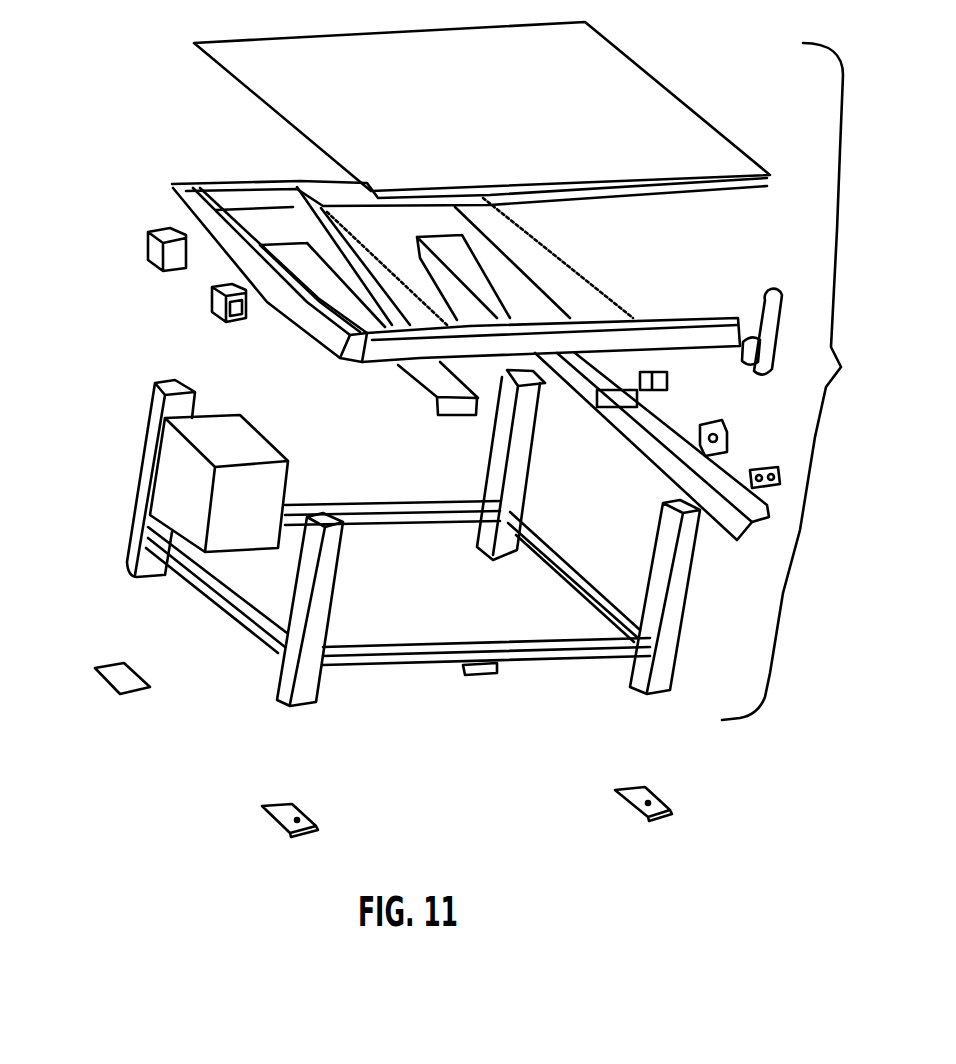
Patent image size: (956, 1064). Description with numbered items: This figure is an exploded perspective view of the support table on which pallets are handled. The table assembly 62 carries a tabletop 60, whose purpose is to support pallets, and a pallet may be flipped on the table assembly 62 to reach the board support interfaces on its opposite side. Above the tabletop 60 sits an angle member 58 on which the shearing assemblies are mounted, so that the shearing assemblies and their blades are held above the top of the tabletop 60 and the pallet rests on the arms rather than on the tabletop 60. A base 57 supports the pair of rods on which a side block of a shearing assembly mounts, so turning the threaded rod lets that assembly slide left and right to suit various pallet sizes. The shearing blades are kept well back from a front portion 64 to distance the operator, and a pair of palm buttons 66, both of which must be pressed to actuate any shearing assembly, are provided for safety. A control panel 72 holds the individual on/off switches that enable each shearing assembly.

The base 57 is at (677, 385).
The angle member 58 is at (745, 465).
The tabletop 60 is at (683, 93).
The table assembly 62 is at (488, 440).
The front portion 64 is at (262, 100).
The palm buttons 66 is at (147, 262).
The control panel 72 is at (147, 472).